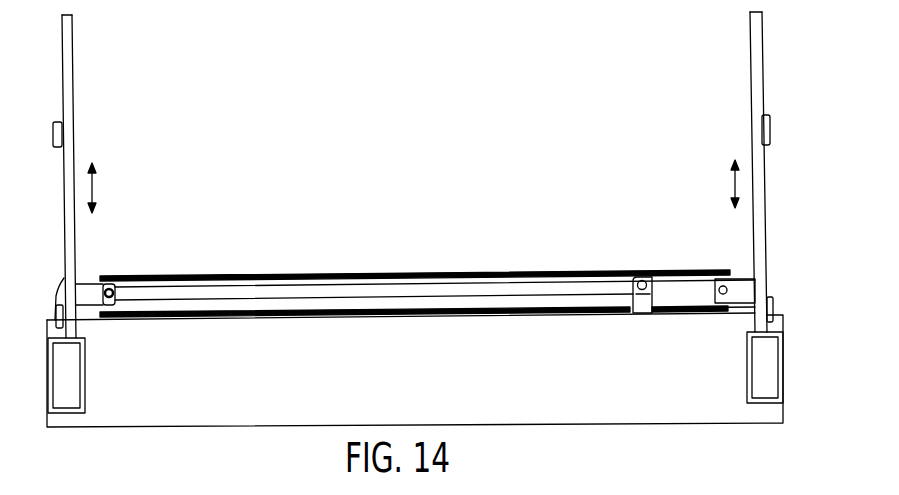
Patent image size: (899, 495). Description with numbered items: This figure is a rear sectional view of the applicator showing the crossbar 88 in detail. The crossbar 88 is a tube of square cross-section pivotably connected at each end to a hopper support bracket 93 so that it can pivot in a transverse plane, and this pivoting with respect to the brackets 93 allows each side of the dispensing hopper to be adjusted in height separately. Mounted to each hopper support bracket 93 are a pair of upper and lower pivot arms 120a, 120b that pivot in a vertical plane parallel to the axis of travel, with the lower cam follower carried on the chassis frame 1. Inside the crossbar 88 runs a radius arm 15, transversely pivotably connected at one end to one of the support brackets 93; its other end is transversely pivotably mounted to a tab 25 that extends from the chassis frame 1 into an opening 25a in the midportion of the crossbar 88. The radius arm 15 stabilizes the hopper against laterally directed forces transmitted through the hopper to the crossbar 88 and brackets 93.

The chassis frame 1 is at (48, 378).
The hopper support bracket 93 is at (72, 42).
The upper pivot arm 120a is at (73, 147).
The lower pivot arm 120b is at (64, 278).
The crossbar 88 is at (307, 275).
The radius arm 15 is at (408, 287).
The tab 25 is at (638, 277).
The opening 25a is at (642, 307).